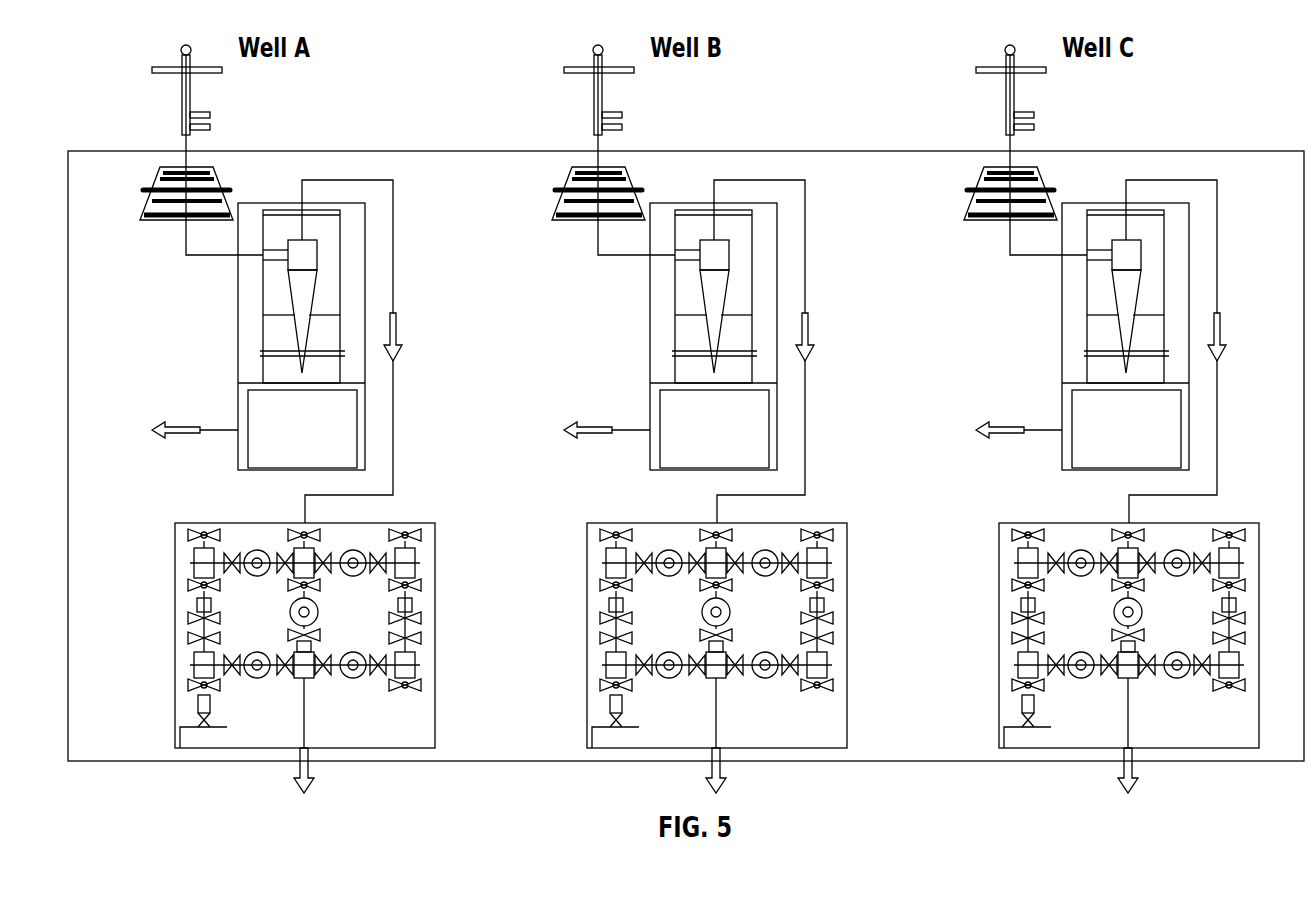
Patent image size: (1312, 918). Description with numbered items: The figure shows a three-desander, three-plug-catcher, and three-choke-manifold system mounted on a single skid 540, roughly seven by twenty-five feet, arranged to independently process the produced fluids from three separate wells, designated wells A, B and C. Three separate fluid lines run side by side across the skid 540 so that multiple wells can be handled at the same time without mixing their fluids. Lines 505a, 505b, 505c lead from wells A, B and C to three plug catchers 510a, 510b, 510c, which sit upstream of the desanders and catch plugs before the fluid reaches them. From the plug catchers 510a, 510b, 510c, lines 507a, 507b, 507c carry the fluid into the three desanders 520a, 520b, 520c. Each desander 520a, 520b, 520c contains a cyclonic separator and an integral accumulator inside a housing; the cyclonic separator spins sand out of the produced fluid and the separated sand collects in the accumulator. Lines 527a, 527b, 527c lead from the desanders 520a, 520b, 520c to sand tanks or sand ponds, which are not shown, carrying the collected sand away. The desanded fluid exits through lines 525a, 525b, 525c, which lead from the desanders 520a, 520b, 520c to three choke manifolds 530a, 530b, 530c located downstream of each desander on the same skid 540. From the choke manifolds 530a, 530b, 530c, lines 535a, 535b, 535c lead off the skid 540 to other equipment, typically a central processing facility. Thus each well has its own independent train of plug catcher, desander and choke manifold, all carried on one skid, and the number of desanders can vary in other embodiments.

The line from well A 505a is at (180, 146).
The line from well B 505b is at (574, 106).
The line from well C 505c is at (986, 106).
The line 507a is at (223, 252).
The line 507b is at (649, 211).
The line 507c is at (1061, 211).
The plug catcher 510a is at (173, 228).
The plug catcher 510b is at (573, 240).
The plug catcher 510c is at (985, 240).
The desander 520a is at (237, 437).
The desander 520b is at (637, 363).
The desander 520c is at (1049, 363).
The line 525a is at (343, 178).
The line 525b is at (764, 317).
The line 525c is at (1176, 317).
The line 527a is at (233, 424).
The line 527b is at (567, 402).
The line 527c is at (979, 402).
The choke manifold 530a is at (427, 713).
The choke manifold 530b is at (789, 643).
The choke manifold 530c is at (1113, 677).
The line 535a is at (312, 783).
The line 535b is at (759, 778).
The line 535c is at (1171, 778).
The skid 540 is at (457, 163).